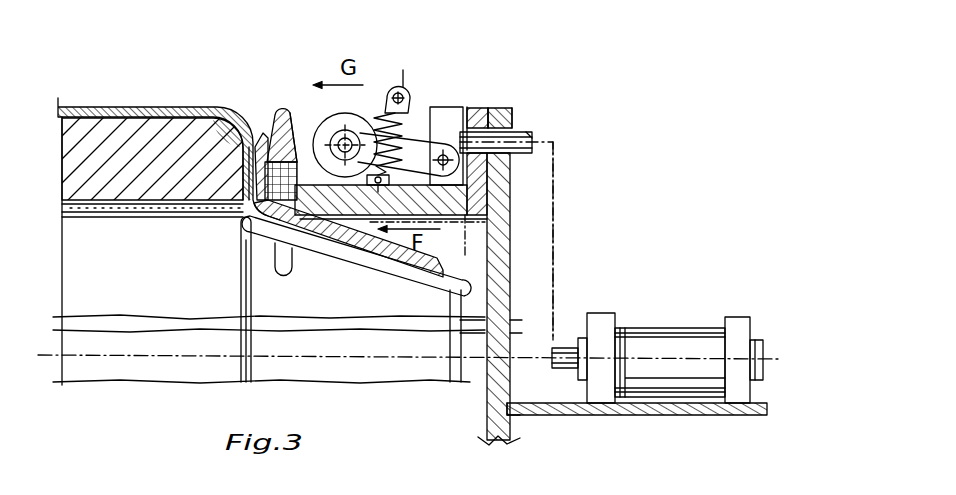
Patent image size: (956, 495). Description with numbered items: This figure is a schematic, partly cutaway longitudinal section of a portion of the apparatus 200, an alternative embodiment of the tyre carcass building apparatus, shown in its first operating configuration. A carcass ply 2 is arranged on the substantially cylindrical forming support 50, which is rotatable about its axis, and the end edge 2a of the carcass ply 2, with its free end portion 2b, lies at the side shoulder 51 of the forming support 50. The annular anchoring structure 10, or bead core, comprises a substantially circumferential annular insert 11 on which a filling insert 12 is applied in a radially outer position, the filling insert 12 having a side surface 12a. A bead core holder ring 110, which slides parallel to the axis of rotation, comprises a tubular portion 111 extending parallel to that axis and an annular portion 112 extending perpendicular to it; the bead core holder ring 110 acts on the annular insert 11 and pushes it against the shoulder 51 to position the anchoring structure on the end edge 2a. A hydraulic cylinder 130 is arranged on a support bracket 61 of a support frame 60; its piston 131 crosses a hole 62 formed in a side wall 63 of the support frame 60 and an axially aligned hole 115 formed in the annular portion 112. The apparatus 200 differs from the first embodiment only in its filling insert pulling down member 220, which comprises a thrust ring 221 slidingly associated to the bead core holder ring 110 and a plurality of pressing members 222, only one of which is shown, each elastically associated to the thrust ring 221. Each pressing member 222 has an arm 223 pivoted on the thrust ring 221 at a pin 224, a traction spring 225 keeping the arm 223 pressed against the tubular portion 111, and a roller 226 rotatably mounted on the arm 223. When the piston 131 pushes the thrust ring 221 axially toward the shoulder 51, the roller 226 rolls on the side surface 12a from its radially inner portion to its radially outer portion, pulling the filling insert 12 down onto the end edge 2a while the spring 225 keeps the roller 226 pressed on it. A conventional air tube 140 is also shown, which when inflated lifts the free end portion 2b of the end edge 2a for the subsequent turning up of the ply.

The carcass ply 2 is at (157, 107).
The end edge of the carcass ply 2a is at (236, 212).
The free end portion of the end edge 2b is at (362, 250).
The annular anchoring structure 10 is at (279, 114).
The substantially circumferential annular insert 11 is at (280, 200).
The filling insert 12 is at (266, 140).
The side surface of the filling insert 12a is at (296, 118).
The forming support 50 is at (86, 167).
The side shoulder of the forming support 51 is at (248, 172).
The support frame 60 is at (514, 419).
The support bracket 61 is at (715, 415).
The hole on the side wall 62 is at (515, 117).
The side wall of the support frame 63 is at (502, 292).
The bead core holder ring 110 is at (458, 224).
The tubular portion of the bead core holder ring 111 is at (338, 200).
The annular portion of the bead core holder ring 112 is at (506, 110).
The hole on the annular portion 115 is at (488, 108).
The hydraulic cylinder 130 is at (650, 342).
The piston 131 is at (533, 133).
The air tube 140 is at (423, 288).
The apparatus 200 is at (609, 98).
The filling insert pulling down member 220 is at (449, 98).
The thrust ring 221 is at (477, 108).
The pressing member 222 is at (387, 80).
The arm 223 is at (447, 115).
The pin 224 is at (492, 167).
The traction spring 225 is at (412, 152).
The roller 226 is at (325, 127).